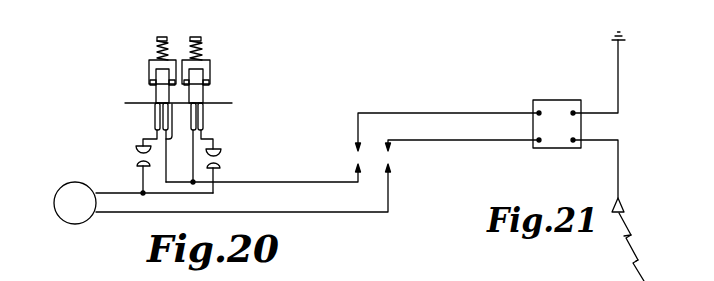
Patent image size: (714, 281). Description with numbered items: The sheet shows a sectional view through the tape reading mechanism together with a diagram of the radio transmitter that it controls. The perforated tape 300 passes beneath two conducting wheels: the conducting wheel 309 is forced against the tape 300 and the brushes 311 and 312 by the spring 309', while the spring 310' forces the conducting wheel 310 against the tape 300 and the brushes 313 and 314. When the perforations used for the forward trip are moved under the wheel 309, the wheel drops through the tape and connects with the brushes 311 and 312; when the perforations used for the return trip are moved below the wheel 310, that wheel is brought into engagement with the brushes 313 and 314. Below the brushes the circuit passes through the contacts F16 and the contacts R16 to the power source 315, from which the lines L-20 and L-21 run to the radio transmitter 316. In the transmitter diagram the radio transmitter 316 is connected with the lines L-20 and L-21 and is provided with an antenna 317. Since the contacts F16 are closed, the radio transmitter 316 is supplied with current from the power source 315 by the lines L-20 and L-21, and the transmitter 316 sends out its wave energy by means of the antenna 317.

In FIG. 20, the tape 300 is at (128, 103).
In FIG. 20, the conducting wheel 309 is at (142, 81).
In FIG. 20, the spring 309' is at (139, 48).
In FIG. 20, the conducting wheel 310 is at (216, 81).
In FIG. 20, the spring 310' is at (223, 48).
In FIG. 20, the brush 311 is at (153, 109).
In FIG. 20, the brush 312 is at (181, 142).
In FIG. 20, the brush 313 is at (198, 110).
In FIG. 20, the brush 314 is at (205, 131).
In FIG. 20, the contacts F16 is at (133, 161).
In FIG. 20, the reverse contact R16 is at (229, 161).
In FIG. 20, the power source 315 is at (56, 222).
In FIG. 20, the line L-20 is at (341, 178).
In FIG. 21, the line L-20 is at (460, 111).
In FIG. 20, the line L-21 is at (389, 194).
In FIG. 21, the line L-21 is at (428, 141).
In FIG. 21, the radio transmitter 316 is at (552, 100).
In FIG. 21, the antenna 317 is at (618, 188).